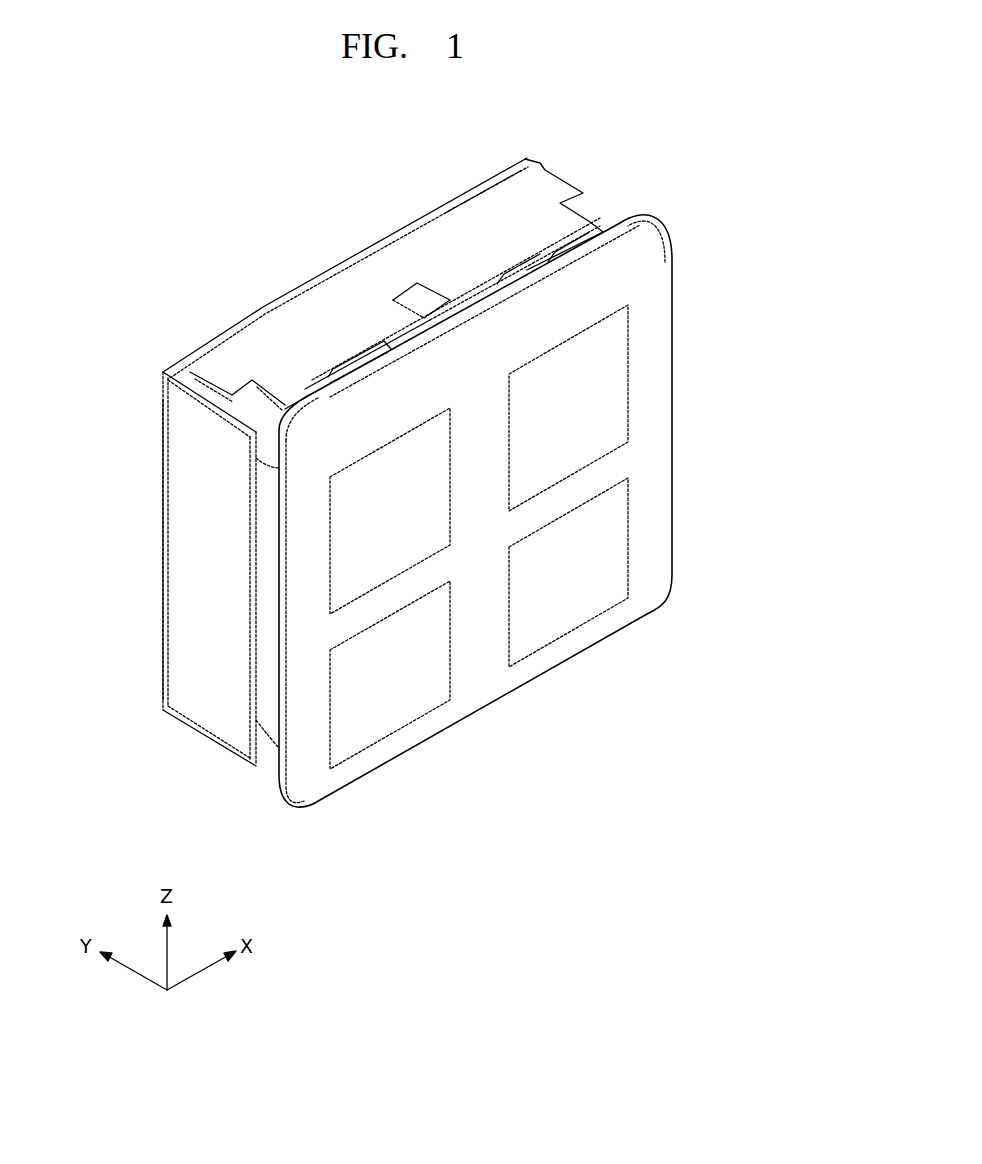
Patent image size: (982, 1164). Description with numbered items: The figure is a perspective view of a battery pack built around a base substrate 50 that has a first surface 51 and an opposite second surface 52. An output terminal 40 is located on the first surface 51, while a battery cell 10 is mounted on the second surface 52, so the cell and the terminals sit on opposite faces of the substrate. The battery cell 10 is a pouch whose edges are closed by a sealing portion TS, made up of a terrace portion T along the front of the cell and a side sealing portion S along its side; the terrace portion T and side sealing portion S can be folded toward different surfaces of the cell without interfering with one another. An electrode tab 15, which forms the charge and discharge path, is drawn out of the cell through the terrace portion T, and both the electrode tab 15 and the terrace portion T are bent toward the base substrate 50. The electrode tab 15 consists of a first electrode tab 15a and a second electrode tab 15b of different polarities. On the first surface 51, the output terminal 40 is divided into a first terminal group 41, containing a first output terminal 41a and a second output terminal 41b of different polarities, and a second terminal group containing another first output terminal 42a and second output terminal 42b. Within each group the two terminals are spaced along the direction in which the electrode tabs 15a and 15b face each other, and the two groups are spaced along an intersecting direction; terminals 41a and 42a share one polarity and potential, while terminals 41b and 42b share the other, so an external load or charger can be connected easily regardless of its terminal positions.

The battery cell 10 is at (132, 647).
The electrode tab 15 is at (387, 144).
The first electrode tab 15a is at (363, 360).
The second electrode tab 15b is at (527, 270).
The output terminal 40 is at (622, 721).
The first terminal group 41 is at (745, 362).
The first output terminal 41a is at (390, 503).
The second output terminal 41b is at (575, 407).
The first output terminal 42a is at (392, 688).
The second output terminal 42b is at (560, 595).
The base substrate 50 is at (676, 619).
The first surface 51 is at (306, 791).
The second surface 52 is at (278, 772).
The sealing portion TS is at (86, 365).
The terrace portion T is at (232, 372).
The side sealing portion S is at (192, 457).